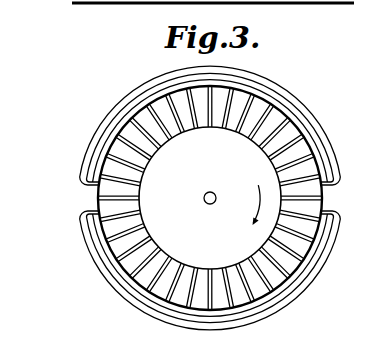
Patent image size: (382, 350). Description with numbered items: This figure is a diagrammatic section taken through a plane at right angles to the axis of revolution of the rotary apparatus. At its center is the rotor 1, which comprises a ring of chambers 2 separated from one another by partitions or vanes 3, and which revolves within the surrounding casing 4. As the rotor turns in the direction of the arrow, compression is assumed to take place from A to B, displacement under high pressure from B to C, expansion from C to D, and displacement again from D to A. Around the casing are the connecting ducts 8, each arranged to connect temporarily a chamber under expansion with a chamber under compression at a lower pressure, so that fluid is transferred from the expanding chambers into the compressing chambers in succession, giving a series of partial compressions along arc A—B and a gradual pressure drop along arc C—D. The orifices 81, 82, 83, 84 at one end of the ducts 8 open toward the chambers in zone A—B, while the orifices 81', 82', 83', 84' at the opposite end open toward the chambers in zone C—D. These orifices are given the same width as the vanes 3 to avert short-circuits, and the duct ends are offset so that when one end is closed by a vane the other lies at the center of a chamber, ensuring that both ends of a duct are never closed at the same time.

The rotor 1 is at (138, 193).
The chambers 2 is at (280, 126).
The partitions or vanes 3 is at (222, 124).
The casing 4 is at (99, 197).
The connecting ducts 8 is at (147, 84).
The duct orifice 81 is at (73, 152).
The duct orifice 82 is at (70, 166).
The duct orifice 83 is at (70, 224).
The duct orifice 84 is at (75, 244).
The duct orifice 81' is at (341, 151).
The duct orifice 82' is at (349, 179).
The duct orifice 83' is at (348, 214).
The duct orifice 84' is at (343, 239).